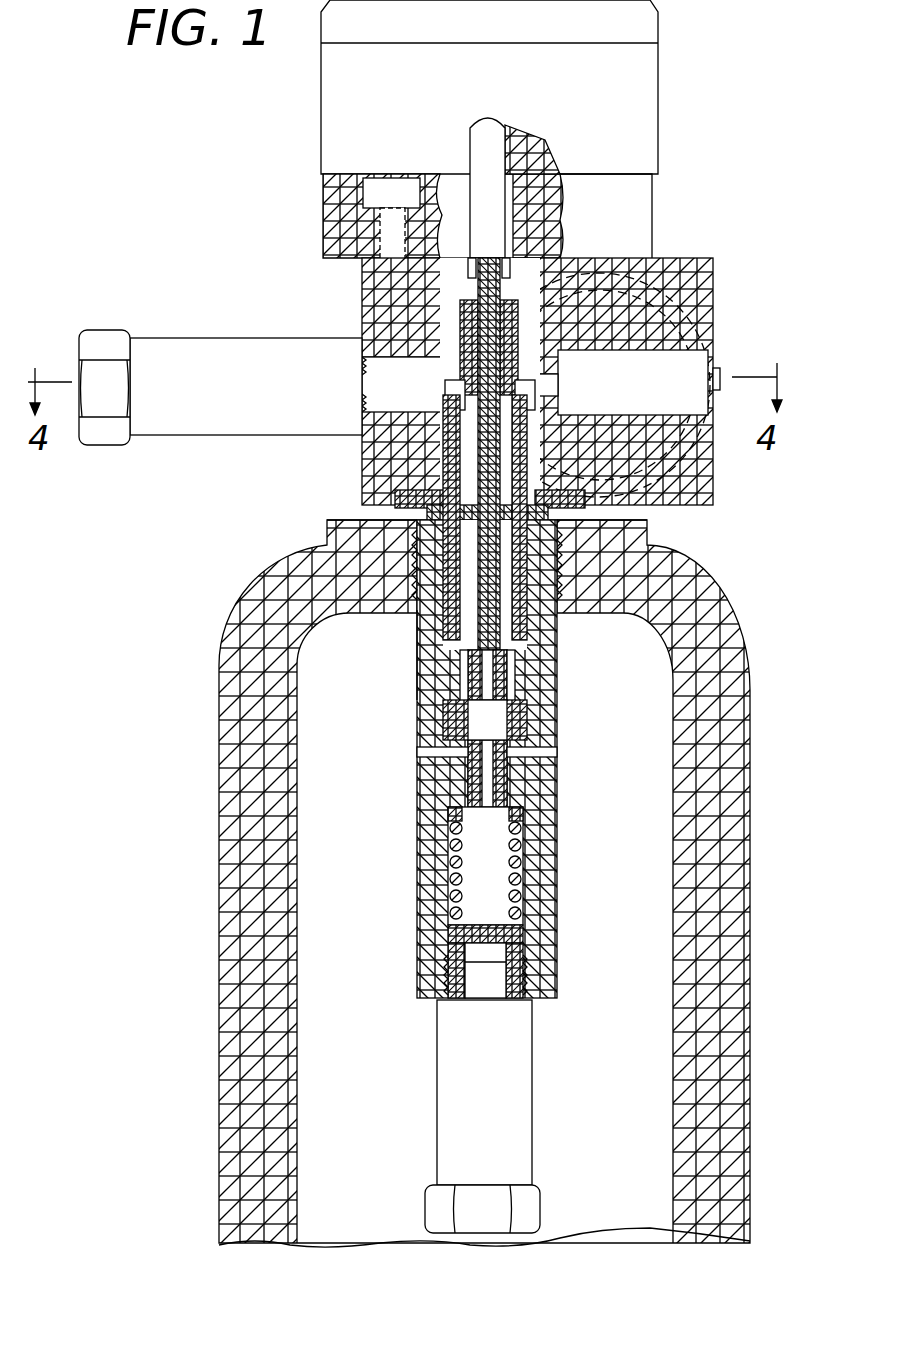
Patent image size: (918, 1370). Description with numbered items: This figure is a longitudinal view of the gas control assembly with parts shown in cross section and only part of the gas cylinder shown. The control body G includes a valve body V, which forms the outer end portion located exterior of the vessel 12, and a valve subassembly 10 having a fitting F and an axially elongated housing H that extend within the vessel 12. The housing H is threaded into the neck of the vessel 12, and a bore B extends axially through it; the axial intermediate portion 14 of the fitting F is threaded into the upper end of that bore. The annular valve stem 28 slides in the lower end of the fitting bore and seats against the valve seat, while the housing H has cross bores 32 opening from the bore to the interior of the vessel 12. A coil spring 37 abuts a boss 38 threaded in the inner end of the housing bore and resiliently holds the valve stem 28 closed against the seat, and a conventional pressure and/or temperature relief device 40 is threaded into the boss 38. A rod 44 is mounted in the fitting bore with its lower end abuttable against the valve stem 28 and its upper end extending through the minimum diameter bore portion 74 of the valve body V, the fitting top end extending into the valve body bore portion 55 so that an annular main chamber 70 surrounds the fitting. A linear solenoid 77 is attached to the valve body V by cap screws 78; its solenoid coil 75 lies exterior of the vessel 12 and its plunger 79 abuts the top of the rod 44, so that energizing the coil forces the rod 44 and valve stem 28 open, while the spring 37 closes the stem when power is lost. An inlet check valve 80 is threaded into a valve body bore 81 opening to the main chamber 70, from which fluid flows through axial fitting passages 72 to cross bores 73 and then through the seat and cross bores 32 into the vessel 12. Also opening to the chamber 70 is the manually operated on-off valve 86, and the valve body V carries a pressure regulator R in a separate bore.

The valve subassembly 10 is at (417, 849).
The vessel 12 is at (279, 1023).
The axial intermediate portion of the fitting 14 is at (565, 553).
The valve stem 28 is at (520, 765).
The cross bores 32 is at (547, 755).
The coil spring 37 is at (450, 880).
The boss 38 is at (520, 973).
The pressure and/or temperature relief device 40 is at (510, 1088).
The rod 44 is at (478, 300).
The valve body further reduced diameter bore portion 55 is at (460, 322).
The annular main chamber 70 is at (562, 380).
The axial fitting passages 72 is at (432, 612).
The cross bores 73 is at (537, 657).
The minimum diameter bore portion 74 is at (505, 290).
The solenoid coil 75 is at (545, 200).
The linear solenoid 77 is at (321, 110).
The cap screws 78 is at (390, 236).
The plunger 79 is at (492, 152).
The inlet check valve 80 is at (283, 418).
The valve body bore 81 is at (370, 446).
The manually operated on-off valve 86 is at (716, 368).
The bore B is at (523, 866).
The fitting F is at (540, 675).
The control body G is at (417, 690).
The housing H is at (545, 820).
The pressure regulator R is at (712, 483).
The valve body V is at (713, 272).